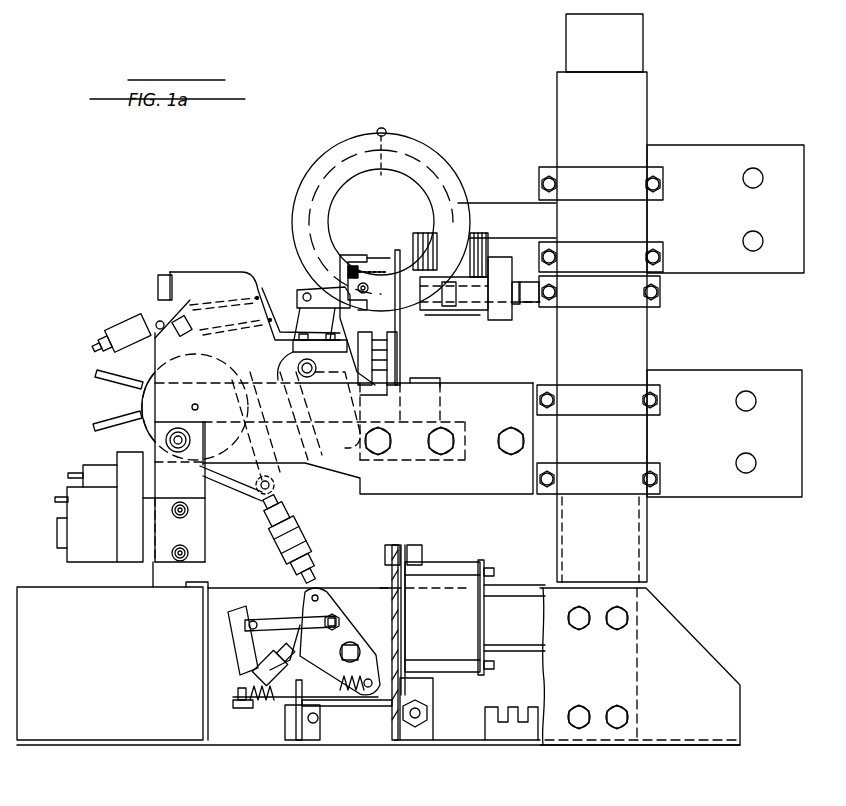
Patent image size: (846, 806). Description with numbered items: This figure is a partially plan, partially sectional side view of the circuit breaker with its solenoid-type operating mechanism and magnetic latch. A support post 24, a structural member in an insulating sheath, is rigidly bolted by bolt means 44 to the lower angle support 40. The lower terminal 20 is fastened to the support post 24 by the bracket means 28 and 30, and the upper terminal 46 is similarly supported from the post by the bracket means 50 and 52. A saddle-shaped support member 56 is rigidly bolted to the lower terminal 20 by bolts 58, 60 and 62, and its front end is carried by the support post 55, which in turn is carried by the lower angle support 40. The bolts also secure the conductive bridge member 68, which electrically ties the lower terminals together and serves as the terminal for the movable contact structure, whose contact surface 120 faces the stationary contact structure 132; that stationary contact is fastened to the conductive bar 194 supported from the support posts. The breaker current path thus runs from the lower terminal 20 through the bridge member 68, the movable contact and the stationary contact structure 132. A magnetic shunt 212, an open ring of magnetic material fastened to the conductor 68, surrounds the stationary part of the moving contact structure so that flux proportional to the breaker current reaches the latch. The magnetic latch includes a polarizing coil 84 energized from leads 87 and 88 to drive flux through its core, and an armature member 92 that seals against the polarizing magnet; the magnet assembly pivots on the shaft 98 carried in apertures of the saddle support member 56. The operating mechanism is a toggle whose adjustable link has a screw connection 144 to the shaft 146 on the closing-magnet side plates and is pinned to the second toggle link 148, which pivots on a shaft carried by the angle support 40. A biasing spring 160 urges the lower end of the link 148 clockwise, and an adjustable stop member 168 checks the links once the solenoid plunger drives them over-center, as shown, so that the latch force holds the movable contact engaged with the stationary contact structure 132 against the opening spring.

The lower terminal 20 is at (785, 425).
The support post 24 is at (640, 521).
The bracket 28 is at (652, 475).
The bracket 30 is at (653, 395).
The lower angle support 40 is at (697, 653).
The bolt means 44 is at (576, 624).
The upper terminal 46 is at (788, 207).
The bracket 50 is at (652, 249).
The bracket 52 is at (661, 168).
The support post 55 is at (174, 492).
The saddle-shaped support member 56 is at (337, 468).
The bolt 58 is at (381, 445).
The bolt 60 is at (444, 446).
The bolt 62 is at (512, 446).
The conductive bridge member 68 is at (466, 431).
The polarizing coil 84 is at (140, 402).
The lead 87 is at (97, 374).
The lead 88 is at (93, 428).
The armature member 92 is at (215, 455).
The pivotal mounting shaft 98 is at (318, 376).
The contact surface 120 is at (392, 242).
The stationary contact structure 132 is at (415, 237).
The screw connection 144 is at (320, 542).
The shaft 146 is at (254, 494).
The toggle link 148 is at (328, 601).
The biasing spring 160 is at (268, 703).
The adjustable stop member 168 is at (303, 653).
The conductive bar 194 is at (498, 313).
The magnetic shunt 212 is at (349, 425).